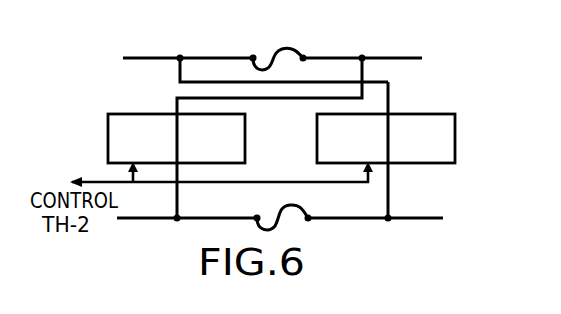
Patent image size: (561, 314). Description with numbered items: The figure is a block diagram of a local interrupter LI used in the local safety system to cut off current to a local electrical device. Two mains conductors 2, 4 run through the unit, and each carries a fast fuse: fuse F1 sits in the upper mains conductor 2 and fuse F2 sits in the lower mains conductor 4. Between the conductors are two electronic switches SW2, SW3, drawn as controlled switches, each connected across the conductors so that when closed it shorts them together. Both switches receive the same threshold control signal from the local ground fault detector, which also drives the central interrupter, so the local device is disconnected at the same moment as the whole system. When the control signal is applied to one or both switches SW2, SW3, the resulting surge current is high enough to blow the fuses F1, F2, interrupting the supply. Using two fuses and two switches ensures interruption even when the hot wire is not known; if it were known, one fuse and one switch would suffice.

The local interrupter LI is at (178, 44).
The mains conductor 2 is at (403, 57).
The mains conductor 4 is at (415, 218).
The fast fuse F1 is at (301, 50).
The fast fuse F2 is at (308, 217).
The electronic switch SW2 is at (138, 114).
The electronic switch SW3 is at (404, 113).